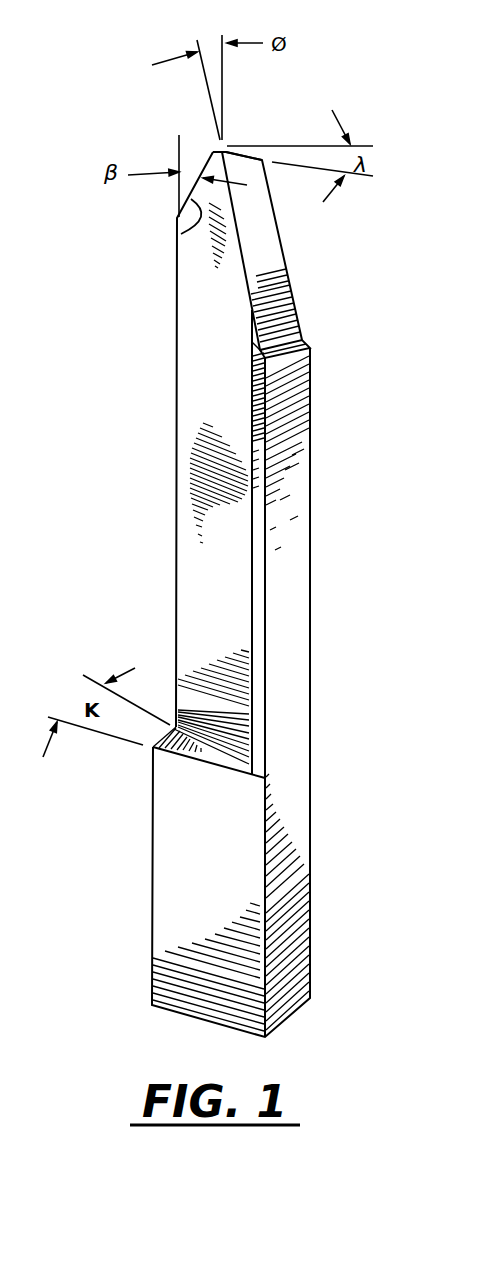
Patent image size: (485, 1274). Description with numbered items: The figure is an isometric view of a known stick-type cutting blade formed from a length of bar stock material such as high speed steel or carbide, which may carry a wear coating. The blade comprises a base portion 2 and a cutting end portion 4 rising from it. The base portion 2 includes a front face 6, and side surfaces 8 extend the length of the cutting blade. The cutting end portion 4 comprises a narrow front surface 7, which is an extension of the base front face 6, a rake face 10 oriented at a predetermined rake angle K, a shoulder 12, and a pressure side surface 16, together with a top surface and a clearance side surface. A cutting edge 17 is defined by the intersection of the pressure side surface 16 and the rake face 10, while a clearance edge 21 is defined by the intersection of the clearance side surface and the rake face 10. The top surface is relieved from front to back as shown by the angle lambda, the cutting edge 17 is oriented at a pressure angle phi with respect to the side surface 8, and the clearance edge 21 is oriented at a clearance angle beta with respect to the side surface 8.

The base portion 2 is at (206, 692).
The cutting end portion 4 is at (234, 465).
The front face 6 is at (206, 857).
The narrow front surface 7 is at (257, 490).
The side surface 8 is at (288, 903).
The rake face 10 is at (230, 393).
The shoulder 12 is at (297, 350).
The pressure side surface 16 is at (285, 297).
The cutting edge 17 is at (247, 265).
The clearance edge 21 is at (180, 233).